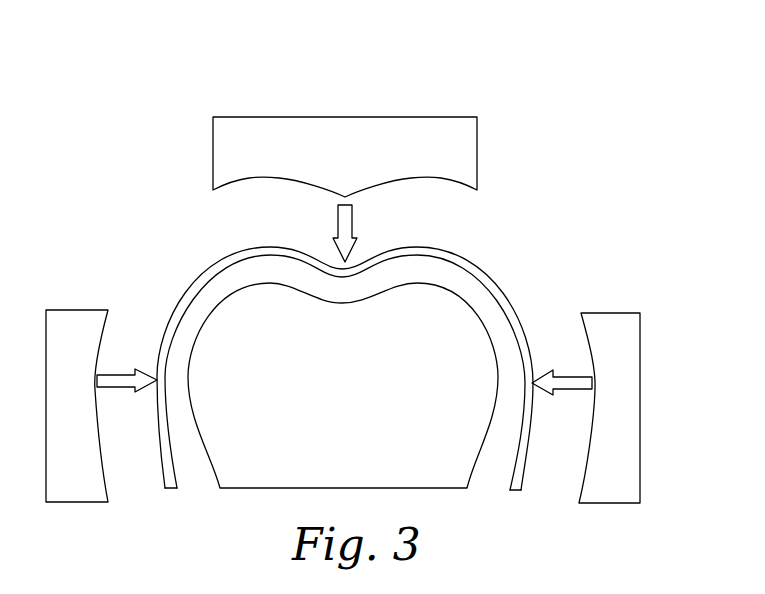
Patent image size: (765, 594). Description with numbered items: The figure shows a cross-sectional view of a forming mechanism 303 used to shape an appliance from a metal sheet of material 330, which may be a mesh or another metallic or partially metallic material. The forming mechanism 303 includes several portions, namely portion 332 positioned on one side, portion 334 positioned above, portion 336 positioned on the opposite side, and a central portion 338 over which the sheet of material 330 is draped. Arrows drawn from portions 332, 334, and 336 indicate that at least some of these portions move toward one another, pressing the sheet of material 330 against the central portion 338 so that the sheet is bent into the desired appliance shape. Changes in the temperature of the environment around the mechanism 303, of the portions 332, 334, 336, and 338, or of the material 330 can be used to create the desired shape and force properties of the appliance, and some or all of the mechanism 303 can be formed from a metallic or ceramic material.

The forming mechanism 303 is at (157, 83).
The portion of the forming mechanism 334 is at (345, 117).
The portion of the forming mechanism 332 is at (80, 310).
The portion of the forming mechanism 336 is at (611, 313).
The metal sheet of material 330 is at (468, 268).
The portion of the forming mechanism 338 is at (233, 292).